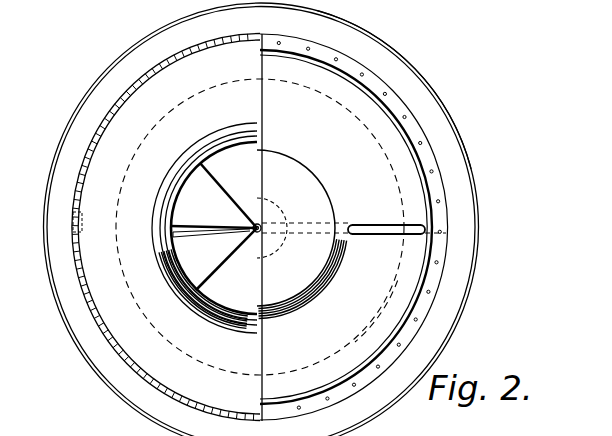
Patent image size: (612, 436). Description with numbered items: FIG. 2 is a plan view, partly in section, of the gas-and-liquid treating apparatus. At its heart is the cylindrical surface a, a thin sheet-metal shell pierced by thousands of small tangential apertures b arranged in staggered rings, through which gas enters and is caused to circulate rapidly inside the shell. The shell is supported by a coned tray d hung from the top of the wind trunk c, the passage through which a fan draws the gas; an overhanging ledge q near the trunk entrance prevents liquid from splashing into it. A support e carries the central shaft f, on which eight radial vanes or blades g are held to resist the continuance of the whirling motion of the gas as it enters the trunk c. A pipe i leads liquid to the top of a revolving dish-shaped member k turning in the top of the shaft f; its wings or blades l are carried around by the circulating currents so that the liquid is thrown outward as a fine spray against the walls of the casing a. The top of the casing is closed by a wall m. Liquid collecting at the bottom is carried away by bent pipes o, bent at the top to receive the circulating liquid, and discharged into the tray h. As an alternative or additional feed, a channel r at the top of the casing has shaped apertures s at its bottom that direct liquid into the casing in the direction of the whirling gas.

The cylindrical surface a is at (112, 119).
The apertures b is at (82, 165).
The wind trunk c is at (190, 182).
The coned tray d is at (203, 305).
The support e is at (184, 236).
The central shaft f is at (265, 205).
The radial vanes g is at (260, 163).
The tray h is at (405, 62).
The pipe i is at (383, 228).
The revolving dish-shaped member k is at (377, 312).
The wings or blades l is at (379, 123).
The wall m is at (302, 212).
The bent pipes o is at (82, 222).
The overhanging ledge q is at (167, 268).
The channel r is at (419, 148).
The apertures s is at (405, 303).